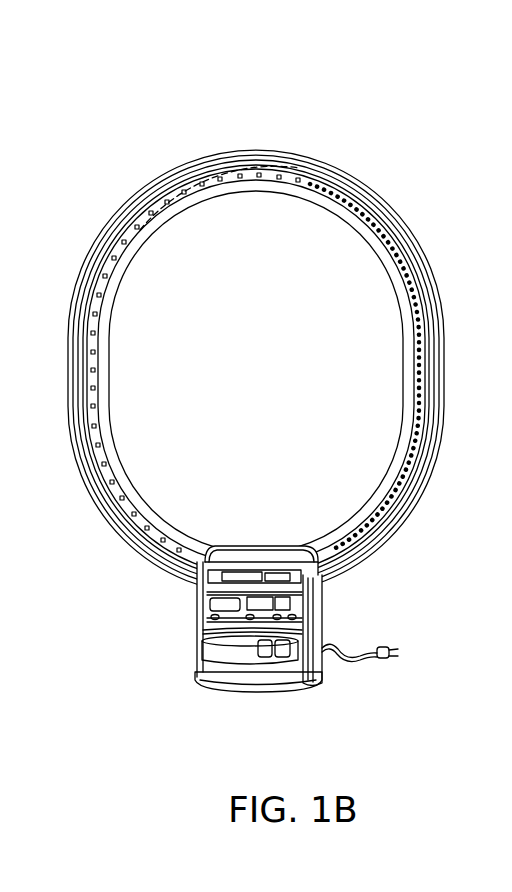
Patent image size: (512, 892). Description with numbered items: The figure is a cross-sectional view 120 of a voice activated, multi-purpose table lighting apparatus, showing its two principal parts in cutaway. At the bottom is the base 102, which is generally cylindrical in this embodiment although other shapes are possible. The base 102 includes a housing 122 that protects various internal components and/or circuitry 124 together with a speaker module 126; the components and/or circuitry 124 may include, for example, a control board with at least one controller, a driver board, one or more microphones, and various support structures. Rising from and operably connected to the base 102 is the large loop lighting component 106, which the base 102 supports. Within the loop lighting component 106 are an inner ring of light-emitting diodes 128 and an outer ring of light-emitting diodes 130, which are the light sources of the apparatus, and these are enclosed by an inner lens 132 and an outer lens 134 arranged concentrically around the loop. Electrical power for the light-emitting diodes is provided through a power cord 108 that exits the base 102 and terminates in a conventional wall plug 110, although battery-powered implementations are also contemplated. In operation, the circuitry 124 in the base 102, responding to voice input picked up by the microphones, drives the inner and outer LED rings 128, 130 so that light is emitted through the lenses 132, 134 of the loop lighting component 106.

The cross-sectional view 120 is at (368, 95).
The loop lighting component 106 is at (400, 240).
The outer lens 134 is at (262, 148).
The inner lens 132 is at (339, 228).
The outer ring of light-emitting diodes 130 is at (430, 313).
The inner ring of light-emitting diodes 128 is at (93, 358).
The base 102 is at (336, 604).
The housing 122 is at (319, 625).
The internal components and/or circuitry 124 is at (200, 637).
The speaker module 126 is at (205, 657).
The power cord 108 is at (331, 657).
The wall plug 110 is at (388, 646).